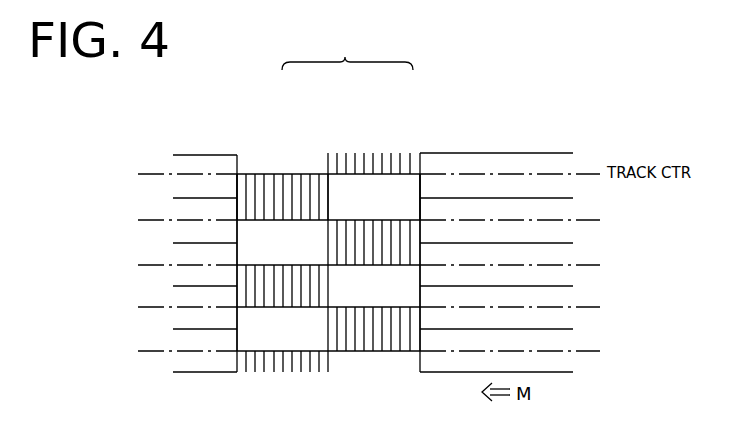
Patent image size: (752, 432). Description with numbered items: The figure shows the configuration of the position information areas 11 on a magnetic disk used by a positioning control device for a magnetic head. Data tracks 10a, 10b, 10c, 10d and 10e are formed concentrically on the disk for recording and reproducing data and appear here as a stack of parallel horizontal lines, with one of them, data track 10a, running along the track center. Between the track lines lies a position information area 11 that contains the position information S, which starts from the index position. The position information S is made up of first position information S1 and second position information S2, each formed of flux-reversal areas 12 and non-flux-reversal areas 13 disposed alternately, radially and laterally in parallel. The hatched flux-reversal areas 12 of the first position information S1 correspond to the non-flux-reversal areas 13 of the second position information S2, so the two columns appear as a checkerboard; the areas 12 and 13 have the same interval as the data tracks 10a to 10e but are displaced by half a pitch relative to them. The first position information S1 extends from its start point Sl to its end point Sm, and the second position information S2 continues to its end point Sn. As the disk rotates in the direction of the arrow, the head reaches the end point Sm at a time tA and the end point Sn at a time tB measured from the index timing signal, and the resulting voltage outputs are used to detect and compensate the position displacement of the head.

The data track 10a is at (548, 173).
The data track 10b is at (575, 220).
The data track 10c is at (575, 265).
The data track 10d is at (575, 307).
The data track 10e is at (575, 351).
The position information area 11 is at (273, 109).
The flux-reversal area 12 is at (256, 197).
The non-flux-reversal area 13 is at (288, 228).
The position information S is at (347, 48).
The first position information S1 is at (292, 131).
The second position information S2 is at (380, 129).
The start point of the first position information Sl is at (244, 173).
The end point of the first position information Sm is at (323, 172).
The end point of the second position information Sn is at (421, 172).